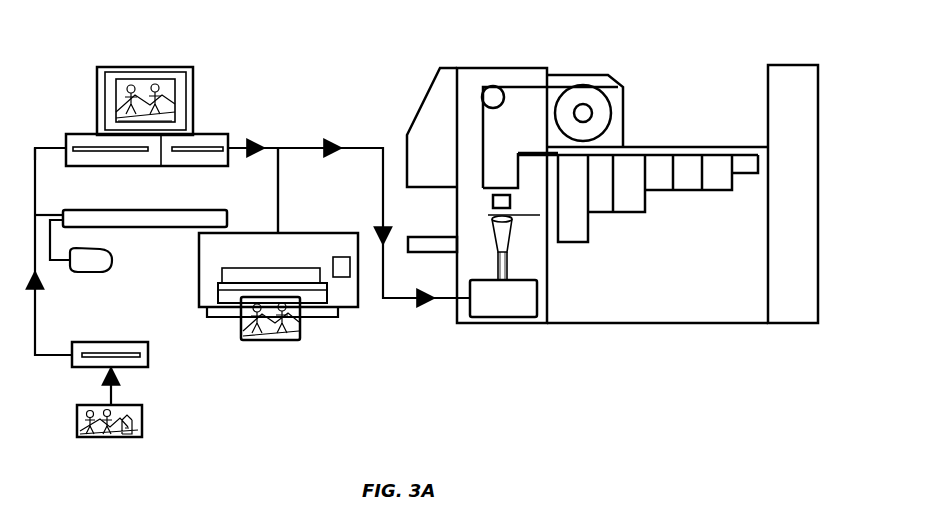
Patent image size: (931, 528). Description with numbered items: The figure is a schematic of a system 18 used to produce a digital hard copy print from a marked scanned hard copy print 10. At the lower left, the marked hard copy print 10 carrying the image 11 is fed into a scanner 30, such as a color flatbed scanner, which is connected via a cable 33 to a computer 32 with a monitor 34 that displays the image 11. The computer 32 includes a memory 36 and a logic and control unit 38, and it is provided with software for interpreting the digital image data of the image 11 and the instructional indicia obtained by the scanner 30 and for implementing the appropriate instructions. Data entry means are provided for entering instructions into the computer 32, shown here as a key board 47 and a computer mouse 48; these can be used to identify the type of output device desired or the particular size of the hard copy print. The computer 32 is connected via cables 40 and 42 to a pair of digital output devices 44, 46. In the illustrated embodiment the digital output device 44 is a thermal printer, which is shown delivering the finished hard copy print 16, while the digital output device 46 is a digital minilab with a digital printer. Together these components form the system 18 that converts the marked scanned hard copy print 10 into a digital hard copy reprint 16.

The marked hard copy print 10 is at (142, 420).
The image 11 is at (148, 82).
The hard copy print 16 is at (300, 335).
The system 18 is at (415, 378).
The scanner 30 is at (108, 342).
The computer 32 is at (208, 134).
The cable 33 is at (47, 147).
The monitor 34 is at (177, 67).
The memory 36 is at (113, 156).
The logic and control unit 38 is at (198, 157).
The cable 40 is at (357, 148).
The cable 42 is at (278, 190).
The digital output device 44 is at (315, 236).
The digital output device 46 is at (477, 68).
The key board 47 is at (140, 228).
The computer mouse 48 is at (108, 275).